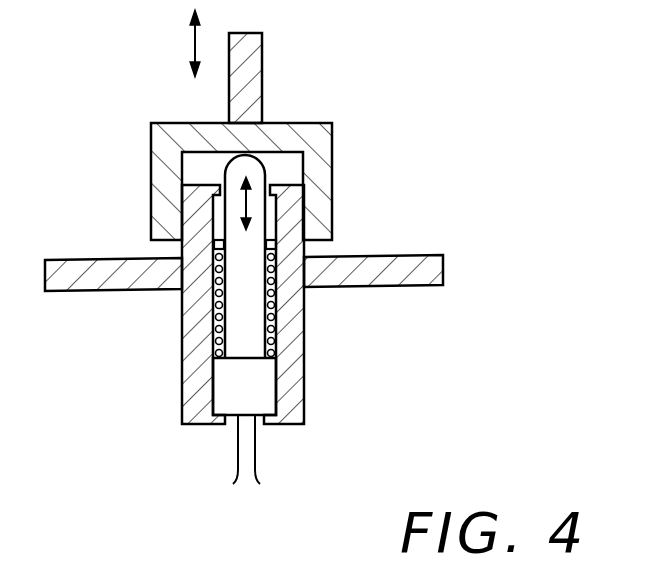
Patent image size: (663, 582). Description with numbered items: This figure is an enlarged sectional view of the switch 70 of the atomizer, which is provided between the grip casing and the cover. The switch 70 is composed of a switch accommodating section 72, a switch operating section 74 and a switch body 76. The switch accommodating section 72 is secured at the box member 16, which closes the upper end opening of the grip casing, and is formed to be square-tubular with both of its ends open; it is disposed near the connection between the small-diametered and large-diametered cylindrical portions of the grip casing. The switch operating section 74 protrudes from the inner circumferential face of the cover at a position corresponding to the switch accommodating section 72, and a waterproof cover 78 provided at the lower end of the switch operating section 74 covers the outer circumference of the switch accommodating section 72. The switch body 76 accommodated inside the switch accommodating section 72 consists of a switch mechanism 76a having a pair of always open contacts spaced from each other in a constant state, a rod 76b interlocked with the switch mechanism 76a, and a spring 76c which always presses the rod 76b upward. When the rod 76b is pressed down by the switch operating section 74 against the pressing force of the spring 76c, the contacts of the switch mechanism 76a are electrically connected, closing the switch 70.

The box member 16 is at (68, 281).
The switch 70 is at (410, 199).
The switch accommodating section 72 is at (187, 370).
The switch operating section 74 is at (255, 58).
The switch body 76 is at (278, 334).
The switch mechanism 76a is at (212, 414).
The rod 76b is at (248, 280).
The spring 76c is at (270, 308).
The waterproof cover 78 is at (317, 175).